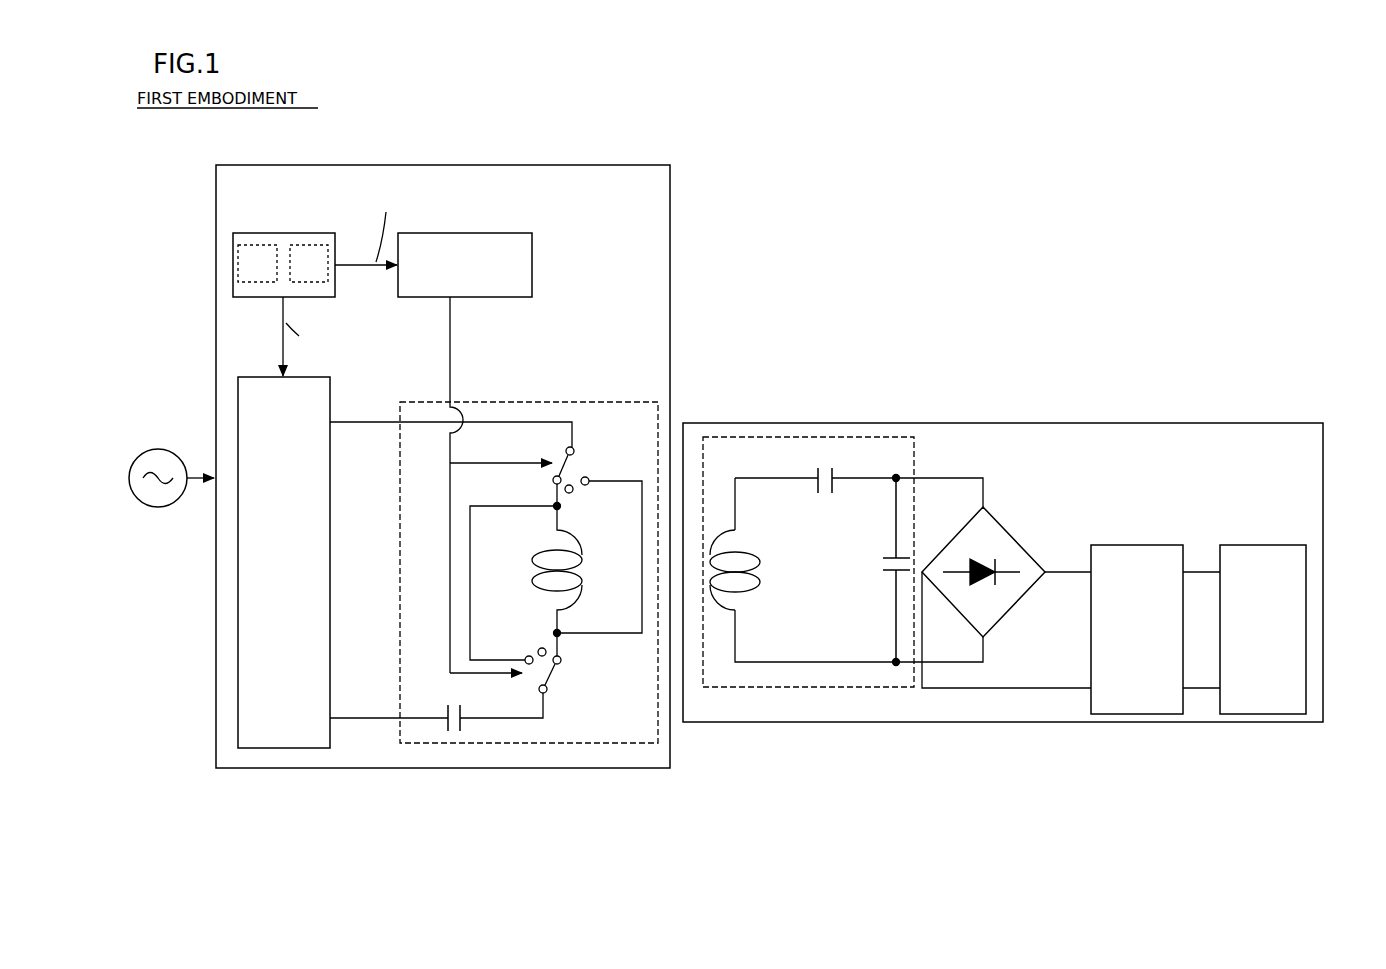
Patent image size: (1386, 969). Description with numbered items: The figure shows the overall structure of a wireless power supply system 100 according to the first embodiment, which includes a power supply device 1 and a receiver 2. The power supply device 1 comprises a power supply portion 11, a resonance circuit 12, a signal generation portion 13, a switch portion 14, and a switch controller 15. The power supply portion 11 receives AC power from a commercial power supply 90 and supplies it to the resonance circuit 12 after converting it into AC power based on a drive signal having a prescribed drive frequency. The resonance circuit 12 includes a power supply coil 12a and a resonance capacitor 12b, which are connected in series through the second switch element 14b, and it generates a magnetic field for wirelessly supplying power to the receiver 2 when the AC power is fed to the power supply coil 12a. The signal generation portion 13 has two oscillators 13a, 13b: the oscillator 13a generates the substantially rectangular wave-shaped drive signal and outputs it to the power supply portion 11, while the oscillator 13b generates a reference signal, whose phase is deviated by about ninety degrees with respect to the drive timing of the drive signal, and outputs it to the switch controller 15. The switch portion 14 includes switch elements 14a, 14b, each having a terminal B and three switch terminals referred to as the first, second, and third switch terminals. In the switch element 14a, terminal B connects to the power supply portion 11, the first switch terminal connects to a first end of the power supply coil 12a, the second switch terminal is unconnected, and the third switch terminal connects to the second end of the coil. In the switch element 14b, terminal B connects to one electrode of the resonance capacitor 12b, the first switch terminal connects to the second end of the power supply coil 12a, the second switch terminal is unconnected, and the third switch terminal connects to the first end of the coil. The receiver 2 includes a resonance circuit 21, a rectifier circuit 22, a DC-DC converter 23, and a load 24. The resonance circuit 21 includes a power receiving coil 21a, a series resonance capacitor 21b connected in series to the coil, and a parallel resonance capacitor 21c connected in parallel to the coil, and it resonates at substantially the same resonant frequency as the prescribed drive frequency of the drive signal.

The wireless power supply system 100 is at (377, 114).
The power supply device 1 is at (612, 166).
The receiver 2 is at (1205, 423).
The power supply portion 11 is at (332, 395).
The resonance circuit 12 is at (619, 403).
The power supply coil 12a is at (582, 568).
The resonance capacitor 12b is at (448, 707).
The signal generation portion 13 is at (262, 234).
The oscillator 13a is at (244, 240).
The oscillator 13b is at (312, 240).
The switch portion 14 is at (575, 564).
The switch element 14a is at (592, 463).
The switch element 14b is at (567, 673).
The switch controller 15 is at (485, 233).
The resonance circuit 21 is at (916, 468).
The power receiving coil 21a is at (756, 552).
The series resonance capacitor 21b is at (818, 469).
The parallel resonance capacitor 21c is at (885, 558).
The rectifier circuit 22 is at (1016, 540).
The DC-DC converter 23 is at (1147, 545).
The load 24 is at (1272, 545).
The commercial power supply 90 is at (172, 455).